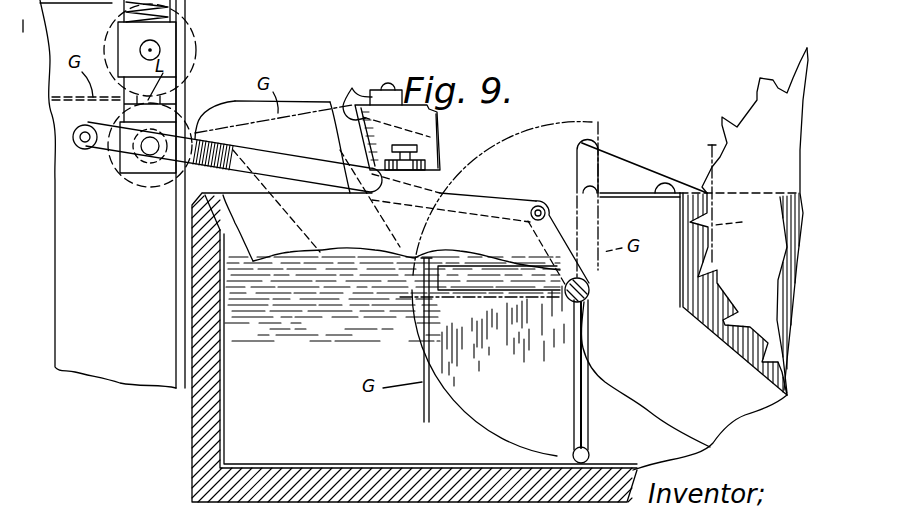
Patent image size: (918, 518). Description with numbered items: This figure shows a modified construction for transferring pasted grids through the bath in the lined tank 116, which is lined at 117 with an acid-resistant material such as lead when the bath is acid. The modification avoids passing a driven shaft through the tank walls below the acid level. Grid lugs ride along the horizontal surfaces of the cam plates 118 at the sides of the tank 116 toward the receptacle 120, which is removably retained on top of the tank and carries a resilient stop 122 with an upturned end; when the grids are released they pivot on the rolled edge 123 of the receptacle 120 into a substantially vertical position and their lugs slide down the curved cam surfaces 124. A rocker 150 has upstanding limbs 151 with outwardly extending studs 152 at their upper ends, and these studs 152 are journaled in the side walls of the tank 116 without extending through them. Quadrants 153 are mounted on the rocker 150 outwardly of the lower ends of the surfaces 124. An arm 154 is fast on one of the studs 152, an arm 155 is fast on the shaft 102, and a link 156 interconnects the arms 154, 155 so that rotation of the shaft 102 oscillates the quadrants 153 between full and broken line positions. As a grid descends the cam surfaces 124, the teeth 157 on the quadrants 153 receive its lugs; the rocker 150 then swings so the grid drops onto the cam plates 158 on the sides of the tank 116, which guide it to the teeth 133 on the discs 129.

The shaft 102 is at (137, 184).
The lined tank 116 is at (193, 418).
The lining 117 is at (223, 393).
The cam plates 118 is at (302, 122).
The receptacle 120 is at (431, 132).
The stop 122 is at (362, 85).
The rolled edge 123 is at (338, 108).
The curved cam surfaces 124 is at (340, 149).
The discs 129 is at (785, 97).
The teeth 133 is at (760, 80).
The rocker 150 is at (588, 452).
The upstanding limbs 151 is at (582, 418).
The studs 152 is at (590, 291).
The quadrants 153 is at (480, 412).
The arm 154 is at (543, 248).
The arm 155 is at (122, 170).
The link 156 is at (337, 178).
The teeth 157 is at (438, 282).
The cam plates 158 is at (627, 157).